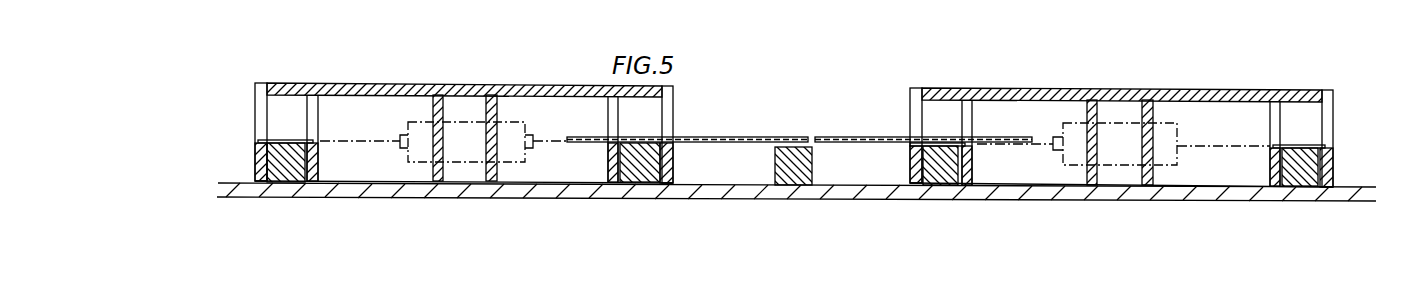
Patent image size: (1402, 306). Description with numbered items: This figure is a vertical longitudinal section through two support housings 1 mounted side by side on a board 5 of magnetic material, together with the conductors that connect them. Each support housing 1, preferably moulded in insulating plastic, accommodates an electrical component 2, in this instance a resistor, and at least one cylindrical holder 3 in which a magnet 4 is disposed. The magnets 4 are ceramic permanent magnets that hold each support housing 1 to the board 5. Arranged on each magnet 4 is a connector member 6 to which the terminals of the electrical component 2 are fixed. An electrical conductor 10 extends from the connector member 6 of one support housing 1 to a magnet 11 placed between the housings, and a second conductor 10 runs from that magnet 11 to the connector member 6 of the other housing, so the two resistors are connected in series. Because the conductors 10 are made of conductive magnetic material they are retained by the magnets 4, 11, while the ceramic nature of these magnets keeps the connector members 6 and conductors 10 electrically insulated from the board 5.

The support housing 1 is at (381, 87).
The electrical component 2 is at (465, 128).
The cylindrical holder 3 is at (328, 160).
The magnet 4 is at (283, 182).
The board 5 is at (718, 198).
The connector member 6 is at (274, 142).
The electrical conductor 10 is at (732, 137).
The magnet 11 is at (797, 180).